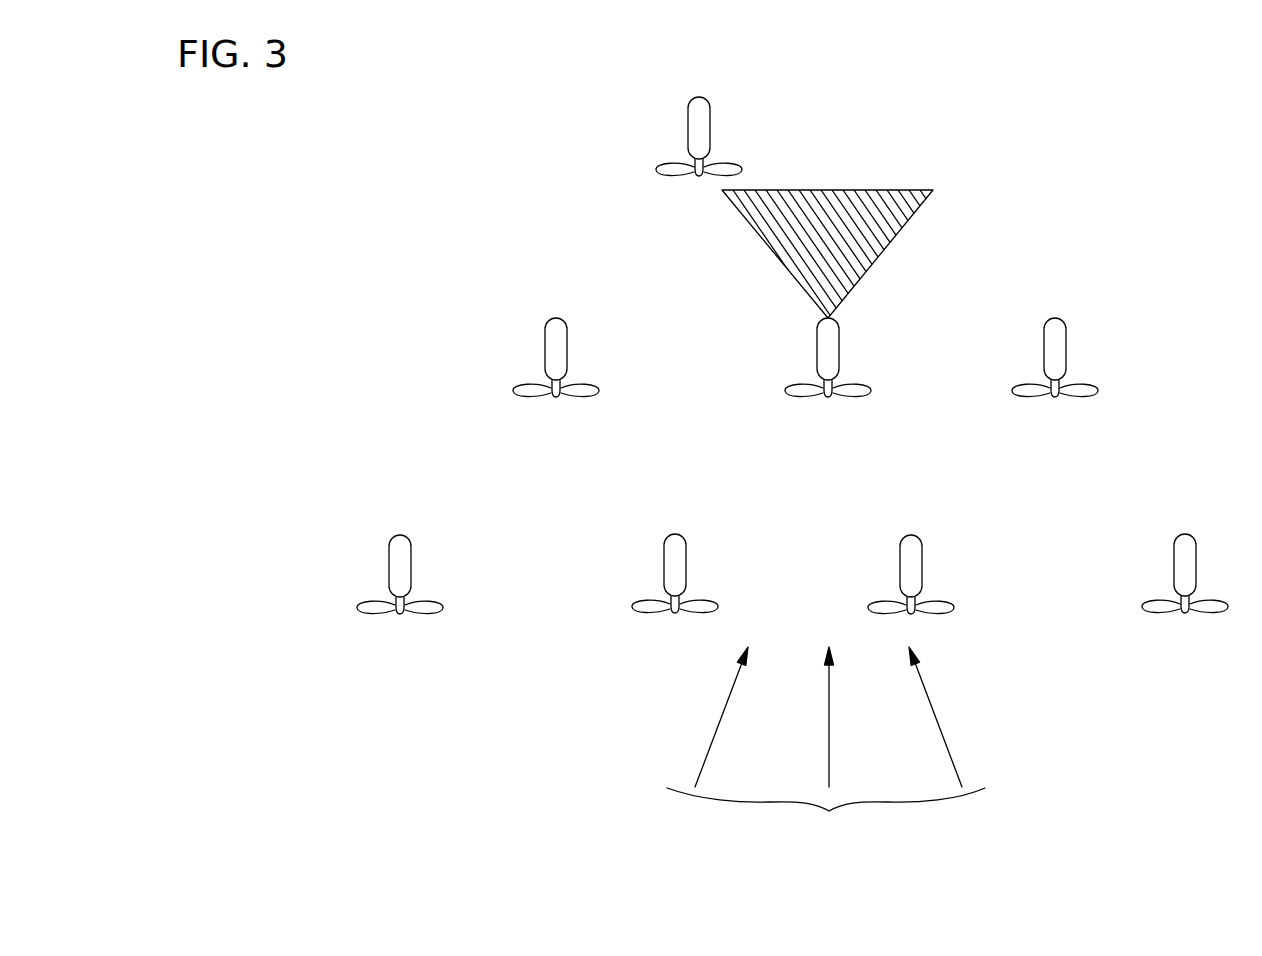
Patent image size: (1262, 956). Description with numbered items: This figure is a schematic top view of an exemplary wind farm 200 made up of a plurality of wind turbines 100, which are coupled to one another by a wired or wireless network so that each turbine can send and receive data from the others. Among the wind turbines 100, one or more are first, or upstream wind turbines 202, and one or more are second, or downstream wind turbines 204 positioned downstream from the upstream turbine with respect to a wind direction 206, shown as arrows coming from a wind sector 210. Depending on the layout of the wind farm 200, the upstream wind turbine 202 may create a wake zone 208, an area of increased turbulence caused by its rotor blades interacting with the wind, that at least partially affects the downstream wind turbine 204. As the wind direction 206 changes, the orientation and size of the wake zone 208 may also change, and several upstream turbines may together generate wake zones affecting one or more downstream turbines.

The wind turbine 100 is at (688, 118).
The wind farm 200 is at (447, 122).
The upstream wind turbine 202 is at (863, 320).
The downstream wind turbine 204 is at (729, 121).
The wind direction 206 is at (723, 707).
The wake zone 208 is at (891, 170).
The wind sector 210 is at (826, 818).